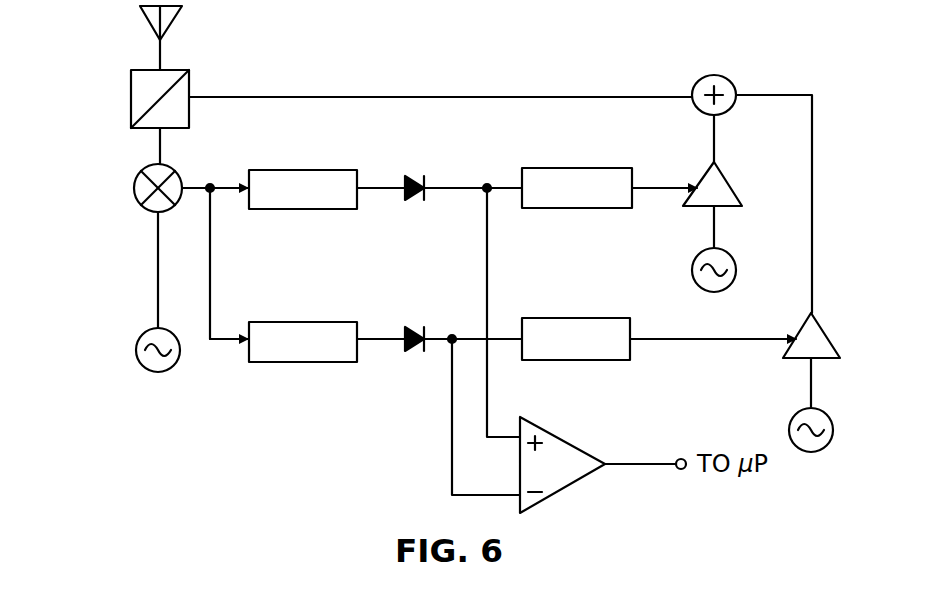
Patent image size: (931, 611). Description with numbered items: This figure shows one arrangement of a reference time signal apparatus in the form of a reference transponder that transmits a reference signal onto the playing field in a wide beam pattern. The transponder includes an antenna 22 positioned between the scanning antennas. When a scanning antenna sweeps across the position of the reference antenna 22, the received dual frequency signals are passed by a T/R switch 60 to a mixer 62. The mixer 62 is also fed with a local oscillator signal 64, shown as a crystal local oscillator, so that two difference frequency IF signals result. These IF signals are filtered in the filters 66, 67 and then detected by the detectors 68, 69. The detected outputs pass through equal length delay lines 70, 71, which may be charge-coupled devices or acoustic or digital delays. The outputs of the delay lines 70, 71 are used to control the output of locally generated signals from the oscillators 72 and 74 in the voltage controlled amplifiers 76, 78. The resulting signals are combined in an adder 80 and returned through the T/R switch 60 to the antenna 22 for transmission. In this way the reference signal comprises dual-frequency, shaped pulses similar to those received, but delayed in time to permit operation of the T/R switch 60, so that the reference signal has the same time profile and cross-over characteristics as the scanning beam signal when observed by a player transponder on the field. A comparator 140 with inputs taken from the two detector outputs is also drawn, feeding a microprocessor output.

The antenna 22 is at (149, 26).
The T/R switch 60 is at (131, 100).
The mixer 62 is at (136, 184).
The local oscillator signal 64 is at (138, 340).
The filter 66 is at (295, 170).
The filter 67 is at (303, 322).
The detector 68 is at (422, 175).
The detector 69 is at (420, 326).
The delay line 70 is at (577, 168).
The delay line 71 is at (581, 318).
The oscillator 72 is at (692, 262).
The oscillator 74 is at (793, 413).
The voltage controlled amplifier 76 is at (725, 176).
The voltage controlled amplifier 78 is at (823, 328).
The adder 80 is at (720, 75).
The comparator 140 is at (572, 441).